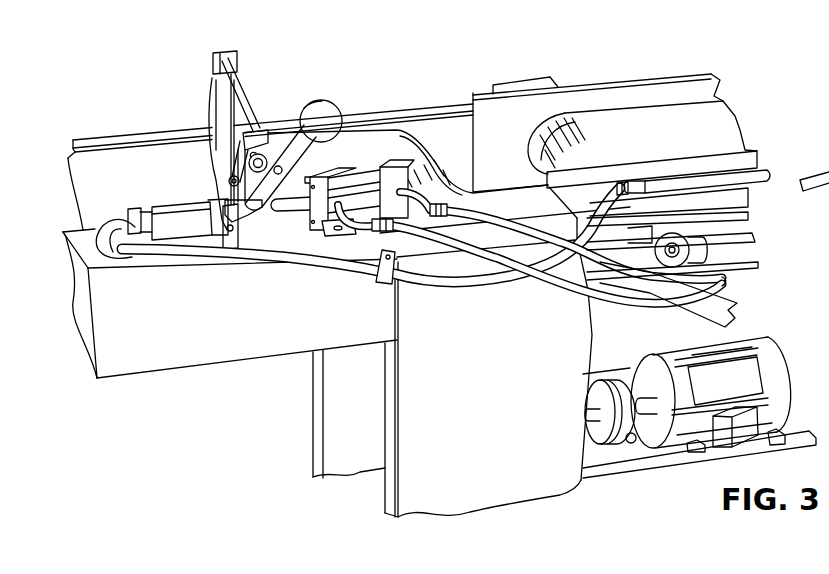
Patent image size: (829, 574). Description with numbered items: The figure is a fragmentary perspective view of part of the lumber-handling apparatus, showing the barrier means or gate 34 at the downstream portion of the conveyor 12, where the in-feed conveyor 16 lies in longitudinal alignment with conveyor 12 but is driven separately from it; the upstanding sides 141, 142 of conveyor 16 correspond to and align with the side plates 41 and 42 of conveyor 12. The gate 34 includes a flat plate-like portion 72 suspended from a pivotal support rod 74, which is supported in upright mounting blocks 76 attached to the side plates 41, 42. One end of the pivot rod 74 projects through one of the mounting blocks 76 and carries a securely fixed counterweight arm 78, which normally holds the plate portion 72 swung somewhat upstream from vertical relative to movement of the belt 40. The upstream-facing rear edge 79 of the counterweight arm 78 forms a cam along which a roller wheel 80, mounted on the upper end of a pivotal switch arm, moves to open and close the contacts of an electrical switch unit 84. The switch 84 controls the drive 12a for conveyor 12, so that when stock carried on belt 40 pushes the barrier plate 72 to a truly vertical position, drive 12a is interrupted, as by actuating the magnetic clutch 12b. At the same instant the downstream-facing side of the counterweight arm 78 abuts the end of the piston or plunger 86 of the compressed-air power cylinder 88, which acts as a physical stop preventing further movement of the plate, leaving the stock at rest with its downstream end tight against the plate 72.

The conveyor 12 is at (127, 170).
The independent drive 12a is at (760, 338).
The magnetic clutch 12b is at (609, 372).
The in-feed conveyor 16 is at (660, 120).
The barrier means or gate 34 is at (214, 114).
The belt 40 is at (121, 196).
The side plate 41 is at (160, 139).
The side plate 42 is at (169, 300).
The plate-like portion 72 is at (215, 151).
The pivotal support rod 74 is at (238, 81).
The upright mounting blocks 76 is at (233, 52).
The counterweight arm 78 is at (291, 134).
The rear edge 79 is at (246, 195).
The roller wheel 80 is at (229, 180).
The electrical switch unit 84 is at (210, 238).
The piston or plunger 86 is at (300, 212).
The power cylinder 88 is at (361, 177).
The upstanding side 141 is at (489, 107).
The upstanding side 142 is at (748, 153).